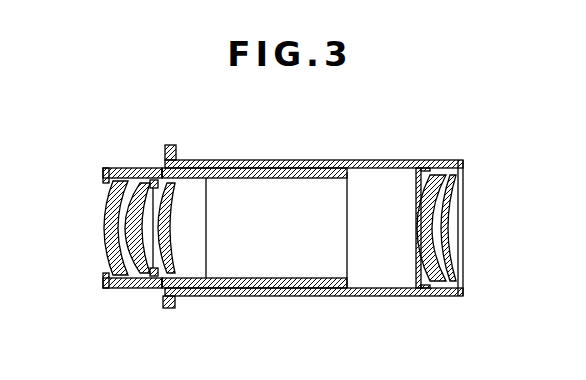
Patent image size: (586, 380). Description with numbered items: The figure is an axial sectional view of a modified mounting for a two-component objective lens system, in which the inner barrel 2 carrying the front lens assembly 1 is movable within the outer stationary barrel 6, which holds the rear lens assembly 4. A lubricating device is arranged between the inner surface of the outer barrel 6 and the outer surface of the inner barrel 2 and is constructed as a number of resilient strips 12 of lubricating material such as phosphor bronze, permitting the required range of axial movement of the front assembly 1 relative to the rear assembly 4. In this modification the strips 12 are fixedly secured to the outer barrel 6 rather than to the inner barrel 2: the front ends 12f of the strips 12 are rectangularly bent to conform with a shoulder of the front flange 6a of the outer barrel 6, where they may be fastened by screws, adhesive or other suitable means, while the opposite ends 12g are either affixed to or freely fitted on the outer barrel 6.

The front lens assembly 1 is at (118, 231).
The inner barrel 2 is at (112, 168).
The rear lens assembly 4 is at (446, 231).
The outer barrel 6 is at (362, 162).
The front flange 6a is at (176, 155).
The resilient strips 12 is at (290, 170).
The front ends 12f is at (165, 168).
The opposite ends 12g is at (420, 168).